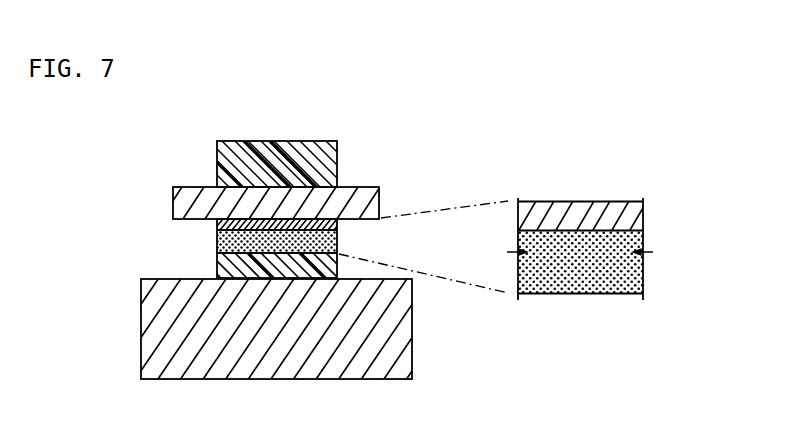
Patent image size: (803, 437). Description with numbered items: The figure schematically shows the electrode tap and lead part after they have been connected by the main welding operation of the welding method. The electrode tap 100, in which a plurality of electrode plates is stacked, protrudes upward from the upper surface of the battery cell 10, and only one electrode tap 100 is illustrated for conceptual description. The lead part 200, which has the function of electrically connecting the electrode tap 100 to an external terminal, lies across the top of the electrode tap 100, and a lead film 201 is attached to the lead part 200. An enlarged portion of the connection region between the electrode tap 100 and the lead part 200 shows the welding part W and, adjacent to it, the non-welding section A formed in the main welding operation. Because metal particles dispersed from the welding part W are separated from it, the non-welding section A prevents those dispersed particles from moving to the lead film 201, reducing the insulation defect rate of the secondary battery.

The battery cell 10 is at (148, 328).
The electrode tap 100 is at (217, 268).
The lead part 200 is at (217, 163).
The lead film 201 is at (176, 204).
The non-welding section A is at (601, 211).
The welding part W is at (597, 283).